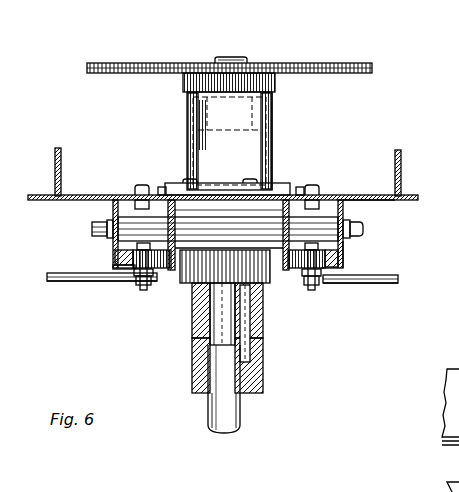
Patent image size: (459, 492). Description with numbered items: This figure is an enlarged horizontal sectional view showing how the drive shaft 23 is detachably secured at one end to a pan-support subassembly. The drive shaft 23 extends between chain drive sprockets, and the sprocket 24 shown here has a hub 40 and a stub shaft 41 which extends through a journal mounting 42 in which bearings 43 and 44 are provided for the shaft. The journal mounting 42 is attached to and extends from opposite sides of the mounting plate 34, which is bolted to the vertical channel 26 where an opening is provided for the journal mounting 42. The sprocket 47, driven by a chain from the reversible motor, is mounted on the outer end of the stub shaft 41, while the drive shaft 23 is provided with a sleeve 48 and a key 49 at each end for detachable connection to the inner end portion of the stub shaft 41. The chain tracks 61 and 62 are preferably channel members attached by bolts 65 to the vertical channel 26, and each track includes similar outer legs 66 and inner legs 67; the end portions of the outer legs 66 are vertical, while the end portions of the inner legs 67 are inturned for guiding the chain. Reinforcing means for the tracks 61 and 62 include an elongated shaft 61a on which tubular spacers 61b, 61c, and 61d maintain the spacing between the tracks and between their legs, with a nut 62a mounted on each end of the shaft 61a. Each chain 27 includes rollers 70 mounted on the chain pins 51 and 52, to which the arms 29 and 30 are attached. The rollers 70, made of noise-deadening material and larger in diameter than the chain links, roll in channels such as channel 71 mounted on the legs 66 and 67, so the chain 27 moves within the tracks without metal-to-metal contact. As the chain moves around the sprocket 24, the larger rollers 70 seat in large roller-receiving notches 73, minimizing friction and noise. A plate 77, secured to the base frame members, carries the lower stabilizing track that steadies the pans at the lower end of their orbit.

The drive shaft 23 is at (240, 416).
The chain drive sprocket 24 is at (196, 262).
The channel 26 is at (401, 173).
The chain 27 is at (156, 268).
The arm 29 is at (50, 274).
The arm 30 is at (54, 282).
The mounting plate 34 is at (183, 186).
The hub 40 is at (256, 284).
The stub shaft 41 is at (234, 57).
The journal mounting 42 is at (275, 158).
The bearing 43 is at (272, 112).
The bearing 44 is at (205, 133).
The sprocket 47 is at (162, 63).
The sleeve 48 is at (262, 376).
The key 49 is at (250, 338).
The chain pin 51 is at (312, 290).
The bolt 52 is at (141, 290).
The track 61 is at (113, 243).
The elongated shaft 61a is at (350, 231).
The tubular spacer 61b is at (126, 222).
The tubular spacer 61c is at (227, 213).
The tubular spacer 61d is at (340, 196).
The track 62 is at (346, 249).
The nut 62a is at (95, 228).
The bolt 65 is at (142, 185).
The outer leg 66 is at (115, 262).
The inner leg 67 is at (163, 187).
The roller 70 is at (136, 272).
The channel 71 is at (122, 268).
The roller-receiving notch 73 is at (226, 270).
The plate 77 is at (412, 199).